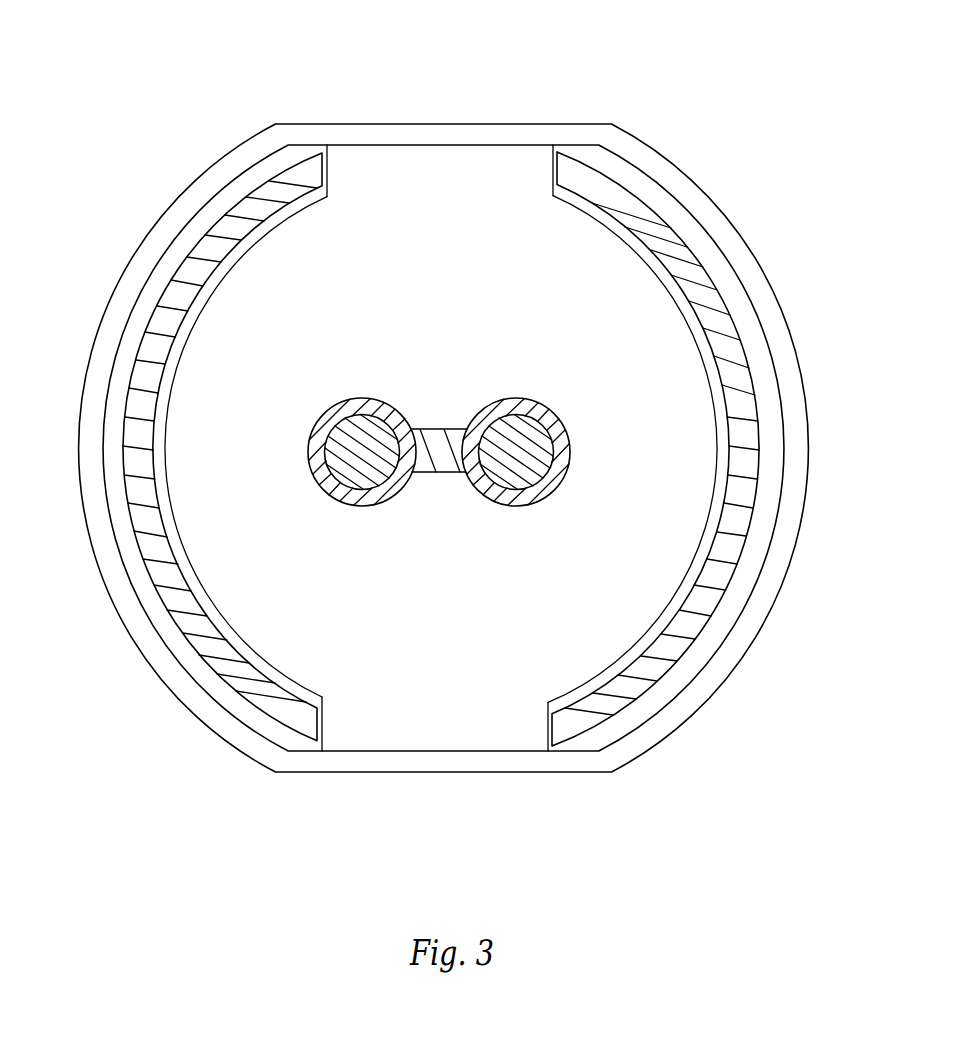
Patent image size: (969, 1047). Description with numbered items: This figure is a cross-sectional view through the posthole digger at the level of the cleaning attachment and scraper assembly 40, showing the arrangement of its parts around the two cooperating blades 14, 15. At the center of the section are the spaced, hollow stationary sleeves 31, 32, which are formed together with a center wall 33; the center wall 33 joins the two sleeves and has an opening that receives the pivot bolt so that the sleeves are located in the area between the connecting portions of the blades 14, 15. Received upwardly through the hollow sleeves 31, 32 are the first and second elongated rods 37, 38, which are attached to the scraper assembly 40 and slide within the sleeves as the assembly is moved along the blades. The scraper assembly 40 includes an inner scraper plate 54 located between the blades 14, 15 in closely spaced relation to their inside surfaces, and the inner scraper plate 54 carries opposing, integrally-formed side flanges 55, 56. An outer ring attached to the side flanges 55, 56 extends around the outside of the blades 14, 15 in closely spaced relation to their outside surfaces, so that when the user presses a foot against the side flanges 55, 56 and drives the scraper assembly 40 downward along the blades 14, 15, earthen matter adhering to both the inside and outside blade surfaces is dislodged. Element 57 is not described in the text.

The scraper assembly 40 is at (172, 119).
The outer jacket 57 is at (767, 310).
The blade 14 is at (152, 540).
The blade 15 is at (747, 427).
The side flange 55 is at (436, 190).
The side flange 56 is at (380, 703).
The inner scraper plate 54 is at (660, 550).
The stationary sleeve 31 is at (350, 490).
The elongated rod 37 is at (353, 448).
The stationary sleeve 32 is at (497, 503).
The elongated rod 38 is at (520, 443).
The center wall 33 is at (431, 444).